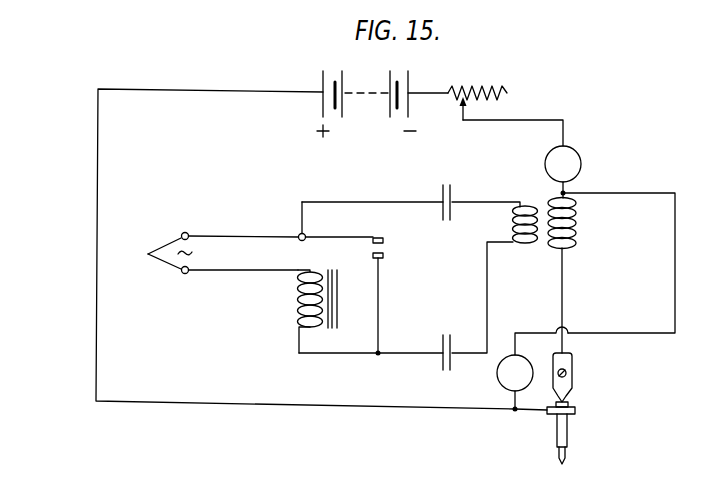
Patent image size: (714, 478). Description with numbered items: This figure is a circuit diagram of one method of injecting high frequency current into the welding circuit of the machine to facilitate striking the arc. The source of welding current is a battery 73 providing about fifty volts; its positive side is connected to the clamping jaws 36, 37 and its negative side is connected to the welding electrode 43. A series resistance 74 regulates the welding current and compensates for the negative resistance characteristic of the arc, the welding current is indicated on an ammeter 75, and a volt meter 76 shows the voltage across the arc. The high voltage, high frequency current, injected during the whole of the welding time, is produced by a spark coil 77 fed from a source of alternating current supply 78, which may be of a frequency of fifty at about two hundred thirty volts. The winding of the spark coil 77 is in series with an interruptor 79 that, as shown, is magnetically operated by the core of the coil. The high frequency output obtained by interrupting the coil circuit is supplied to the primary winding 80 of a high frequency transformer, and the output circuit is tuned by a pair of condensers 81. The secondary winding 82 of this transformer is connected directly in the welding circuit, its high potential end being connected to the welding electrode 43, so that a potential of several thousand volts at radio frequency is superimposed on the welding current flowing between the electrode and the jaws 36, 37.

The battery 73 is at (403, 88).
The series resistance 74 is at (480, 88).
The ammeter 75 is at (581, 160).
The volt meter 76 is at (497, 378).
The spark coil 77 is at (299, 297).
The source of alternating current supply 78 is at (212, 253).
The interruptor 79 is at (385, 244).
The primary winding 80 is at (527, 212).
The condensers 81 is at (441, 196).
The secondary winding 82 is at (574, 231).
The welding electrode 43 is at (573, 374).
The clamping jaw 36 is at (592, 433).
The clamping jaw 37 is at (576, 412).